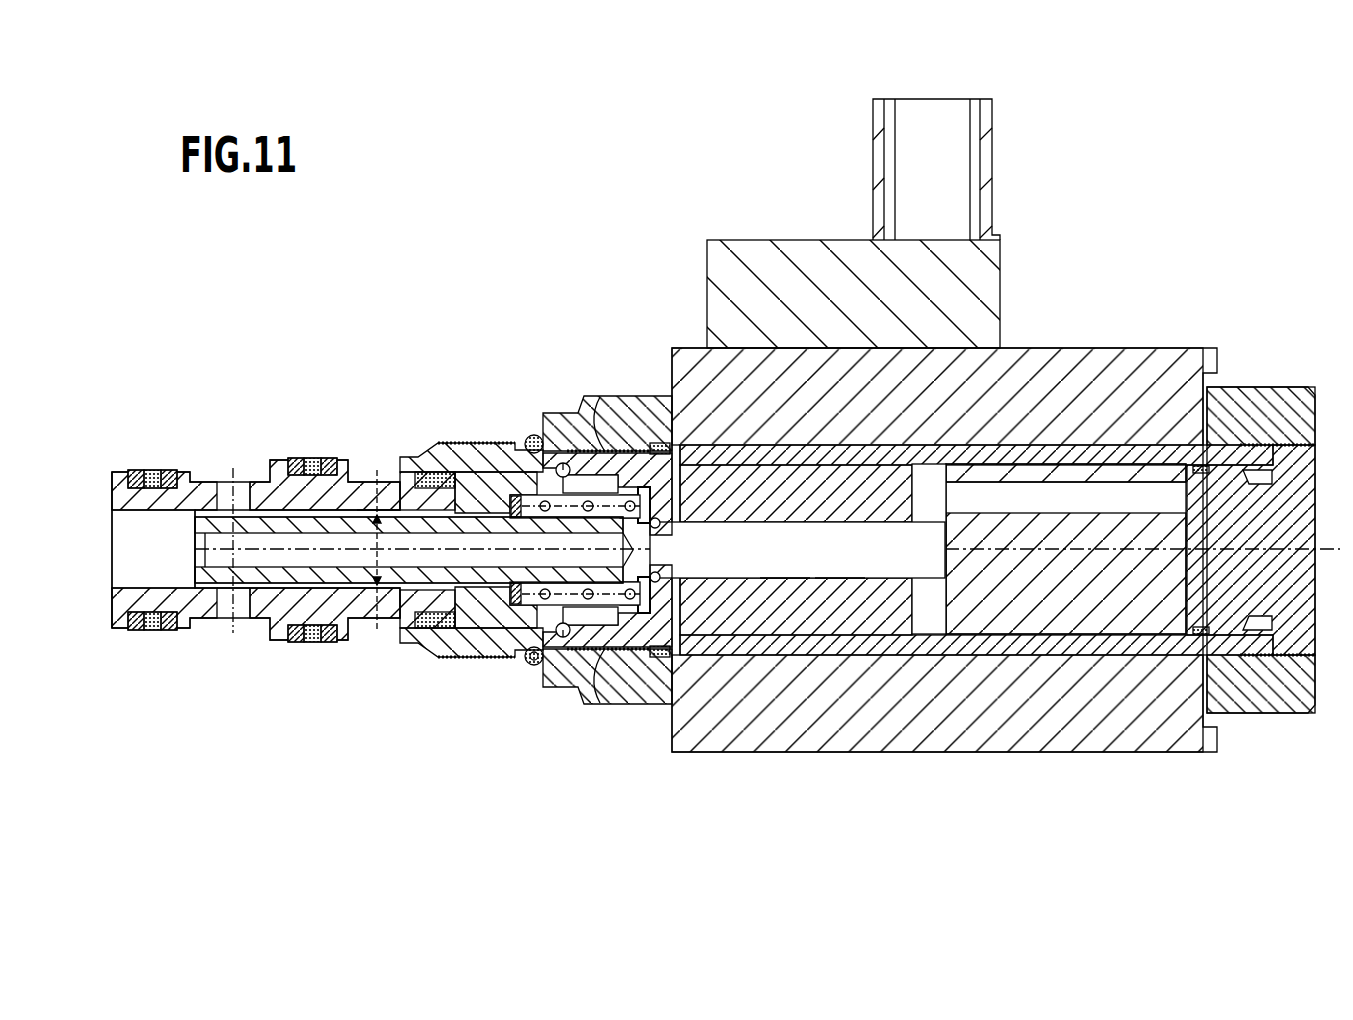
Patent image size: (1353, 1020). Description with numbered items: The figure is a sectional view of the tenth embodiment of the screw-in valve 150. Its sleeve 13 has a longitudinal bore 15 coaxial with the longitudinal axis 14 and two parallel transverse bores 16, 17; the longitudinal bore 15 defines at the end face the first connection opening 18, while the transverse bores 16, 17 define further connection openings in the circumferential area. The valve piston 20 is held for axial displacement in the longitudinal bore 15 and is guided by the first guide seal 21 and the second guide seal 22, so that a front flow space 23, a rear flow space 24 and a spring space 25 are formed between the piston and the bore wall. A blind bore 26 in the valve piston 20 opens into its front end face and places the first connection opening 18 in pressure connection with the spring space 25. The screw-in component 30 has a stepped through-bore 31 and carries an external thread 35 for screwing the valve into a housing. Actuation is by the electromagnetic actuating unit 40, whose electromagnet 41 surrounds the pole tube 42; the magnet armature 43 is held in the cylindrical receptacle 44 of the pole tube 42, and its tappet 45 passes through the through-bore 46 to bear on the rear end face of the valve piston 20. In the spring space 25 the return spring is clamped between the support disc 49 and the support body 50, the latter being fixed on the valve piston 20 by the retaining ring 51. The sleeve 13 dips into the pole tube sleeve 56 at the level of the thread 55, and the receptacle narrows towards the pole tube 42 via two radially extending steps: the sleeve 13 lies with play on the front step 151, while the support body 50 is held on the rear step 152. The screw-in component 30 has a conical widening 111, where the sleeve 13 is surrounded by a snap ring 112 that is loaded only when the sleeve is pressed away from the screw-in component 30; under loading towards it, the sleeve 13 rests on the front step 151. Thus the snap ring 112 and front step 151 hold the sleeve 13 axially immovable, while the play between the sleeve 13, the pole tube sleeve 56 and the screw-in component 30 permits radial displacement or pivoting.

The screw-in valve 150 is at (1026, 215).
The electromagnetic actuating unit 40 is at (1078, 338).
The electromagnet 41 is at (1180, 347).
The pole tube 42 is at (985, 430).
The magnet armature 43 is at (1027, 607).
The cylindrical receptacle 44 is at (937, 627).
The tappet 45 is at (790, 560).
The through-bore 46 is at (837, 565).
The support body 50 is at (683, 522).
The screw-in component 30 is at (652, 382).
The thread 55 is at (600, 447).
The pole tube sleeve 56 is at (590, 703).
The snap ring 112 is at (542, 434).
The conical widening 111 is at (545, 686).
The retaining ring 51 is at (643, 703).
The front step 151 is at (608, 705).
The rear step 152 is at (630, 700).
The external thread 35 is at (432, 445).
The stepped through-bore 31 is at (450, 647).
The support disc 49 is at (455, 472).
The spring space 25 is at (505, 652).
The valve piston 20 is at (274, 586).
The rear flow space 24 is at (377, 592).
The transverse bore 17 is at (362, 595).
The longitudinal axis 14 is at (112, 548).
The sleeve 13 is at (328, 451).
The second guide seal 22 is at (410, 512).
The front flow space 23 is at (205, 600).
The first guide seal 21 is at (233, 478).
The transverse bore 16 is at (225, 588).
The blind bore 26 is at (195, 535).
The first connection opening 18 is at (112, 513).
The longitudinal bore 15 is at (112, 584).